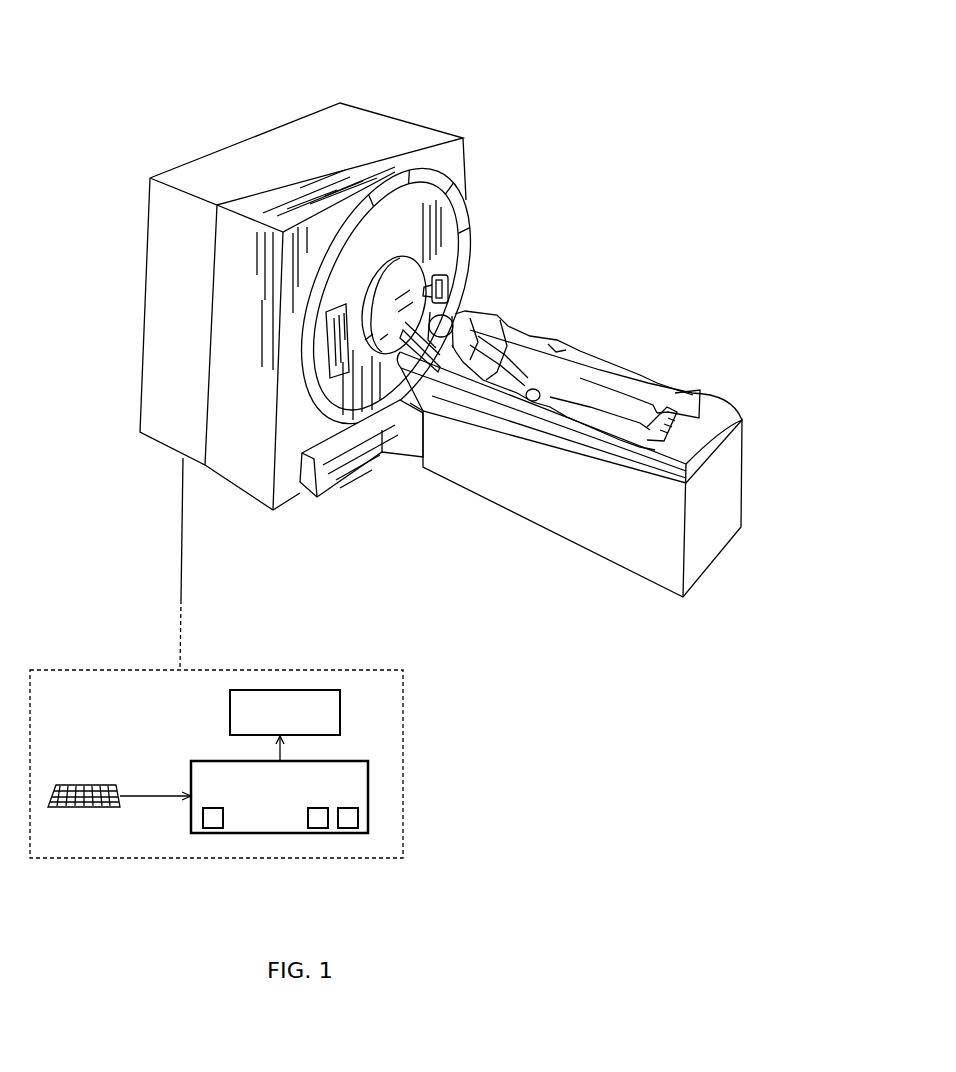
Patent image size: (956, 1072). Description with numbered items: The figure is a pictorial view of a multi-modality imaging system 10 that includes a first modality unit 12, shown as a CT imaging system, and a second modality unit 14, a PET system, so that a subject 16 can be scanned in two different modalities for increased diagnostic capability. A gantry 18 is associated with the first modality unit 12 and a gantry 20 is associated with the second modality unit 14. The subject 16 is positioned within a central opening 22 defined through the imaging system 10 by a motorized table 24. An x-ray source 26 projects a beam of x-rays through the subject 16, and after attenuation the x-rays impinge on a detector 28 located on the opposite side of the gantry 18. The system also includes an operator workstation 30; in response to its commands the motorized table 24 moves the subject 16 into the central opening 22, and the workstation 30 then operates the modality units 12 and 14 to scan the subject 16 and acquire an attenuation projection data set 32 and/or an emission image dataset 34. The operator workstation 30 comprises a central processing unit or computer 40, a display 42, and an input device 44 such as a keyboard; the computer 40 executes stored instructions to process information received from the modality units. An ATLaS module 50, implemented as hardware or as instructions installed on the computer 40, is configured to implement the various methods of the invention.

The multi-modality imaging system 10 is at (754, 203).
The first modality unit 12 is at (255, 493).
The second modality unit 14 is at (166, 438).
The subject 16 is at (530, 325).
The gantry 18 is at (438, 127).
The gantry 20 is at (373, 112).
The central opening 22 is at (392, 282).
The motorized table 24 is at (502, 498).
The x-ray source 26 is at (453, 290).
The detector 28 is at (371, 428).
The operator workstation 30 is at (93, 672).
The attenuation projection data set 32 is at (320, 833).
The emission image dataset 34 is at (360, 815).
The central processing unit (CPU) or computer 40 is at (190, 820).
The display 42 is at (340, 712).
The input device 44 is at (98, 785).
The ATLaS module 50 is at (212, 833).